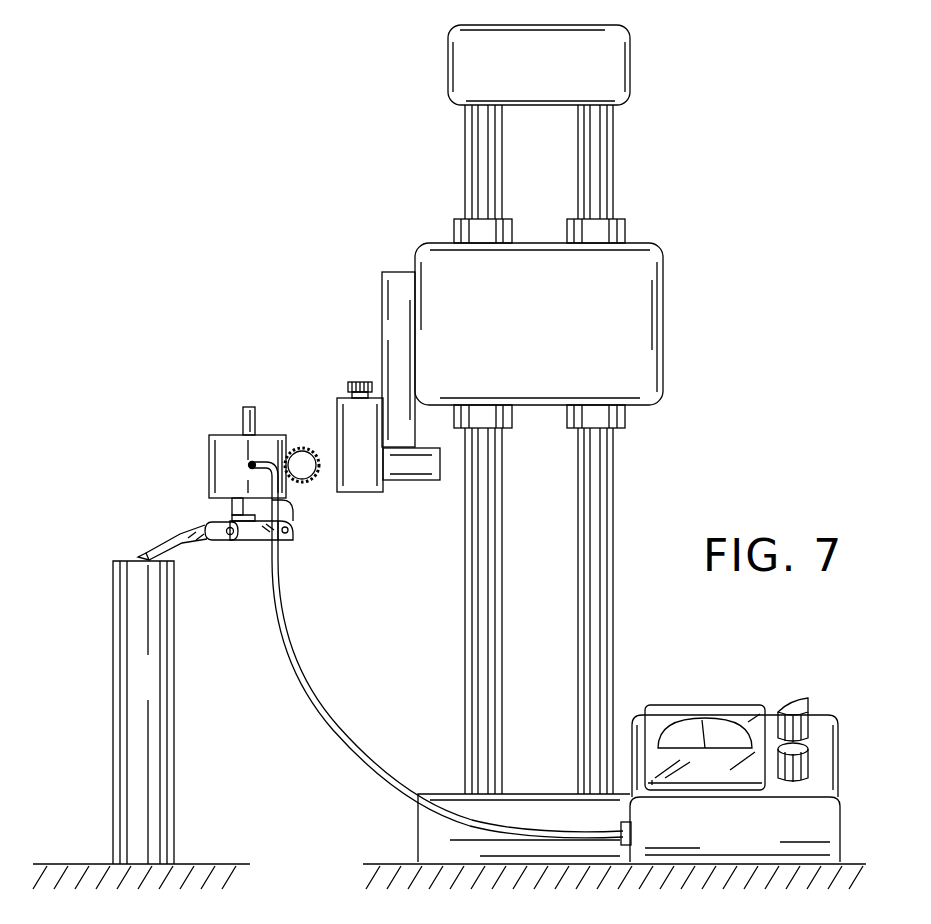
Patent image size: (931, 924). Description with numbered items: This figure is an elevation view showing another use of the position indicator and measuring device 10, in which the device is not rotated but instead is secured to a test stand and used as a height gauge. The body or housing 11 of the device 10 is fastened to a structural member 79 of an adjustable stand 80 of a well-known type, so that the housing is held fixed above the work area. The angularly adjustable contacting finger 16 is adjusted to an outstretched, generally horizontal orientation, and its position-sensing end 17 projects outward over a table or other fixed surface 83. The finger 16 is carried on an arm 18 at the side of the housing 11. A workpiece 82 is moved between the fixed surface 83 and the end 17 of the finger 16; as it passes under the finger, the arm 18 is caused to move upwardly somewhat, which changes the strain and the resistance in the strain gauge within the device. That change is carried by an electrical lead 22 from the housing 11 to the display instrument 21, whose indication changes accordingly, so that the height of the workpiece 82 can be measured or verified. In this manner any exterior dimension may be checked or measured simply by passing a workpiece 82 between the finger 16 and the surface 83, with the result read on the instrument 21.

The position indicator and measuring device 10 is at (200, 421).
The body or housing 11 is at (212, 458).
The contacting finger 16 is at (201, 534).
The position-sensing end 17 is at (138, 556).
The arm 18 is at (255, 540).
The display instrument 21 is at (693, 700).
The electrical lead 22 is at (307, 672).
The structural member 79 is at (330, 440).
The adjustable stand 80 is at (408, 212).
The workpiece 82 is at (160, 727).
The table or other fixed surface 83 is at (72, 864).